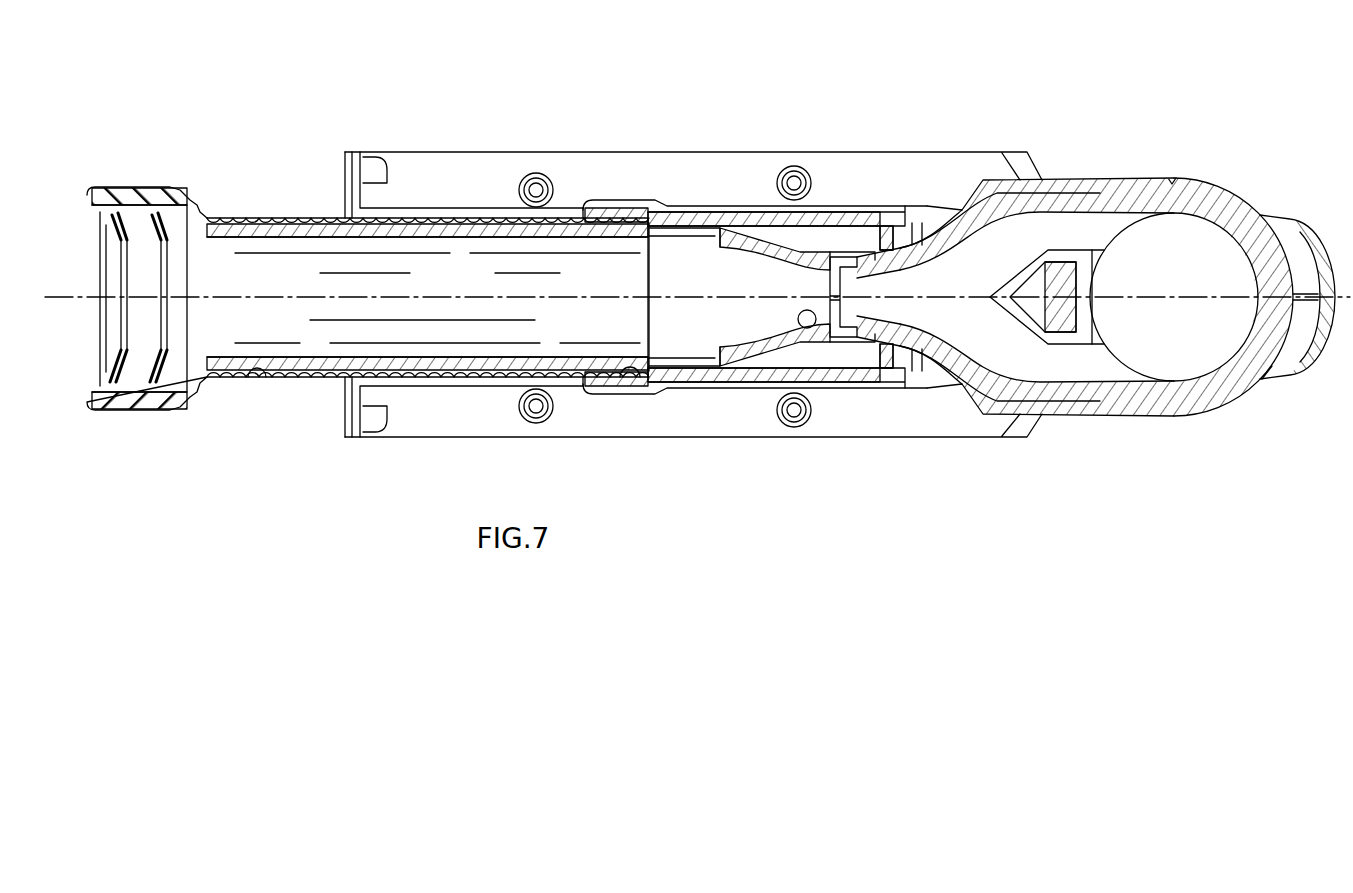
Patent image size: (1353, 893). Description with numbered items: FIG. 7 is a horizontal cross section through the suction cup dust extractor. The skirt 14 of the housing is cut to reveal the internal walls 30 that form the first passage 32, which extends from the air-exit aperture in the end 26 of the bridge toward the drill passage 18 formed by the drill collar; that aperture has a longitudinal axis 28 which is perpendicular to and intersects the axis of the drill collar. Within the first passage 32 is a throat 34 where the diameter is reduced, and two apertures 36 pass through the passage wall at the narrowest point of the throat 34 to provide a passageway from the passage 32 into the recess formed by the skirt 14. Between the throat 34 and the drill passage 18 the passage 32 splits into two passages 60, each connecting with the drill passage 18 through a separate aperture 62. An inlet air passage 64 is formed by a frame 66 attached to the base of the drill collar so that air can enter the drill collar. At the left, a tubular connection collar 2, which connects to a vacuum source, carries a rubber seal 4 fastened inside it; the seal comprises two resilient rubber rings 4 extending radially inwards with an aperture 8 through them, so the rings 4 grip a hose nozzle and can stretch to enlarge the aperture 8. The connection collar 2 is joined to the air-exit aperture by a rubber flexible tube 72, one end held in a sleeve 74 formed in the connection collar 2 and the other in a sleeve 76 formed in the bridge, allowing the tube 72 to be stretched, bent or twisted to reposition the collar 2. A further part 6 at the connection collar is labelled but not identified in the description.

The tubular connection collar 2 is at (122, 212).
The rubber seal 4 is at (150, 210).
The end cap 6 is at (98, 190).
The aperture 8 is at (155, 318).
The skirt 14 is at (676, 168).
The drill passage 18 is at (1210, 286).
The end of the bridge 26 is at (583, 212).
The longitudinal axis of the aperture 28 is at (415, 293).
The internal walls 30 is at (746, 348).
The first passage 32 is at (676, 285).
The throat 34 is at (814, 326).
The apertures 36 is at (849, 317).
The passages 60 is at (1070, 228).
The aperture 62 is at (1114, 240).
The inlet air passage 64 is at (1305, 255).
The frame 66 is at (1282, 373).
The flexible tube 72 is at (305, 385).
The sleeve 74 is at (262, 380).
The sleeve 76 is at (632, 378).